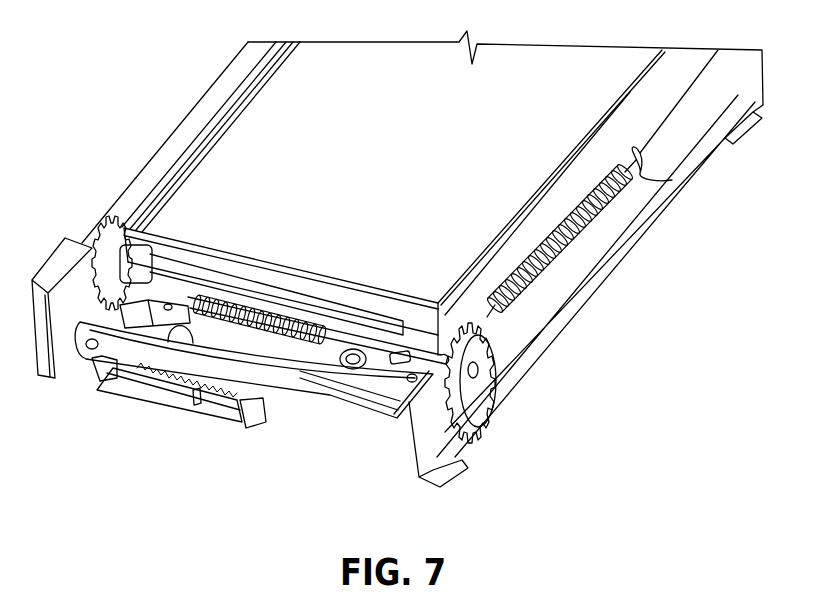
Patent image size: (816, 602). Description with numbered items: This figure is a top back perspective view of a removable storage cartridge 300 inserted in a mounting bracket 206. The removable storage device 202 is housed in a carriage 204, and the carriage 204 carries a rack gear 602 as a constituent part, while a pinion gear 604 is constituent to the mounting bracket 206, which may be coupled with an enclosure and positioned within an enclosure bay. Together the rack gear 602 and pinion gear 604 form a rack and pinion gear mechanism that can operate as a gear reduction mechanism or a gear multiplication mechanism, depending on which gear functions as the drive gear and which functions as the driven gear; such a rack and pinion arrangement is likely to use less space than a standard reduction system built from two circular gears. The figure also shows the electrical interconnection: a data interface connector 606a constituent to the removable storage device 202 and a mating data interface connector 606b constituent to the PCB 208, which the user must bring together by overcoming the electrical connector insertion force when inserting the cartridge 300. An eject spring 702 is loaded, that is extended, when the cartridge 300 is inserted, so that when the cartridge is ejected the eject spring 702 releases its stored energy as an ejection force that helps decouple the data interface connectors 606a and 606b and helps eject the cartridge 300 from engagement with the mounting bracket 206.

The removable storage device 202 is at (572, 83).
The carriage 204 is at (604, 233).
The mounting bracket 206 is at (667, 152).
The PCB 208 is at (292, 382).
The cartridge 300 is at (221, 118).
The rack gear 602 is at (52, 365).
The pinion gear 604 is at (97, 245).
The data interface connector 606a is at (355, 372).
The data interface connector 606b is at (180, 322).
The eject spring 702 is at (564, 257).